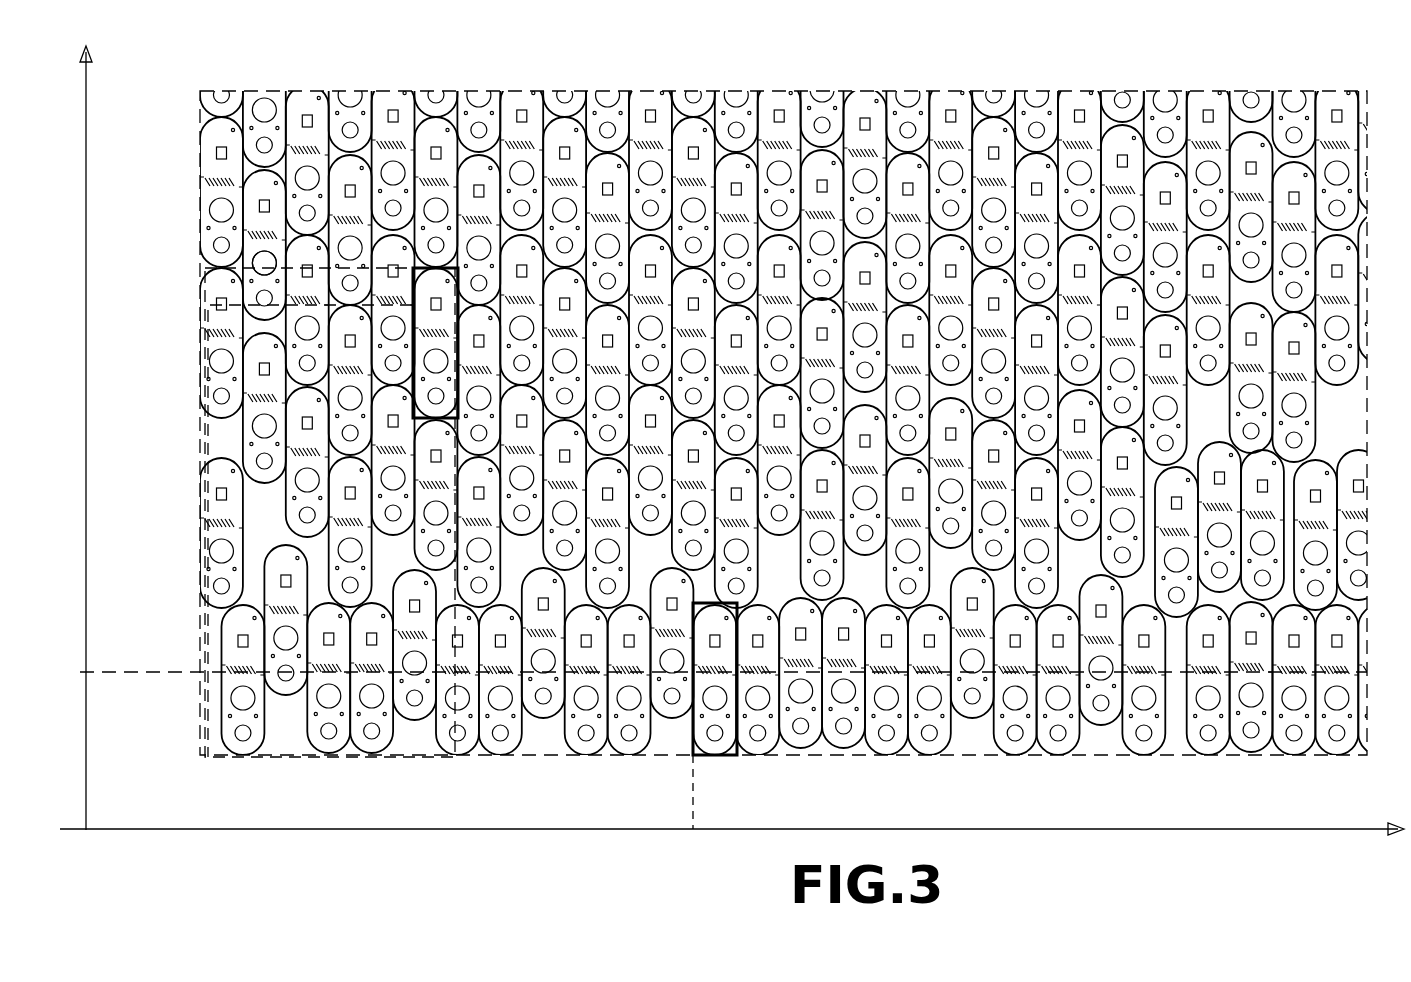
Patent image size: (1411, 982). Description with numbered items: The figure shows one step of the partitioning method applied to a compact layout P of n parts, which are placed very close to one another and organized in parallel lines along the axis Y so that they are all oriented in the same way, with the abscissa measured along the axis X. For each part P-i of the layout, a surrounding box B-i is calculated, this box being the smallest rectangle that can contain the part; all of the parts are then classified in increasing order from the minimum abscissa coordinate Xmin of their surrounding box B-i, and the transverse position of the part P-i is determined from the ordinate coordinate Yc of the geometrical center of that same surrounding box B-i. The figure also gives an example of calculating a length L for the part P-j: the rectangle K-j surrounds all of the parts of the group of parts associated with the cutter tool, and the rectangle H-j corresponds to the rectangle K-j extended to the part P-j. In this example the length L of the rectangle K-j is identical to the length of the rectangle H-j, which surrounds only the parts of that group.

The layout P is at (1131, 74).
The part p-j P-j is at (437, 282).
The rectangle H-j is at (258, 266).
The rectangle K-j is at (233, 305).
The surrounding box B-i is at (740, 612).
The part p-i P-i is at (710, 720).
The ordinate coordinate Yc is at (697, 673).
The minimum abscissa coordinate Xmin is at (693, 810).
The axis X is at (732, 845).
The axis Y is at (73, 437).